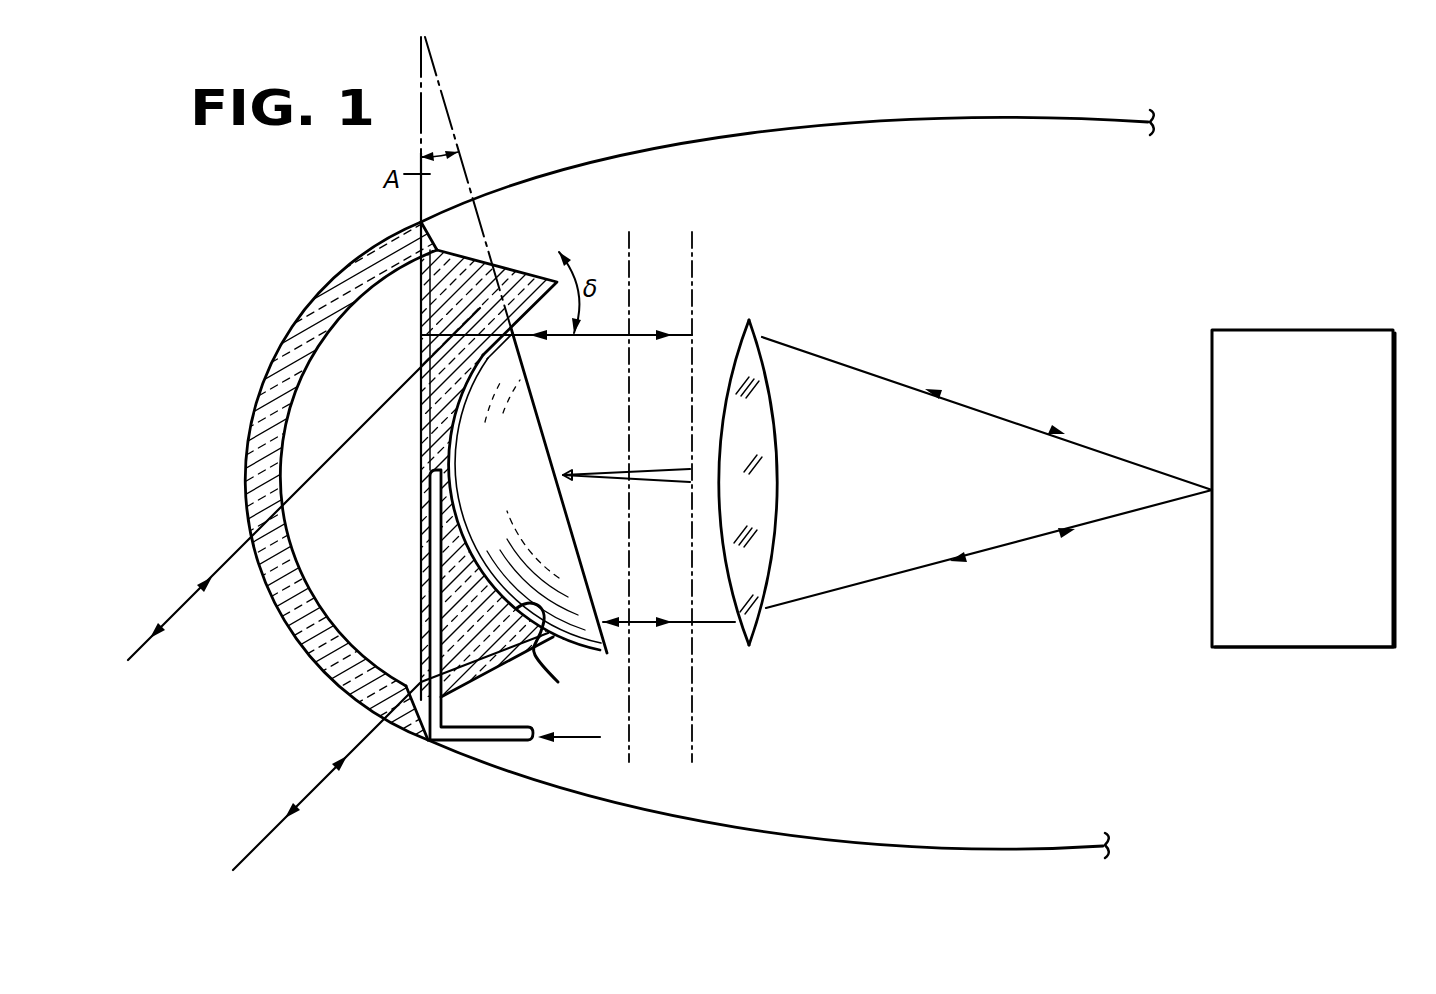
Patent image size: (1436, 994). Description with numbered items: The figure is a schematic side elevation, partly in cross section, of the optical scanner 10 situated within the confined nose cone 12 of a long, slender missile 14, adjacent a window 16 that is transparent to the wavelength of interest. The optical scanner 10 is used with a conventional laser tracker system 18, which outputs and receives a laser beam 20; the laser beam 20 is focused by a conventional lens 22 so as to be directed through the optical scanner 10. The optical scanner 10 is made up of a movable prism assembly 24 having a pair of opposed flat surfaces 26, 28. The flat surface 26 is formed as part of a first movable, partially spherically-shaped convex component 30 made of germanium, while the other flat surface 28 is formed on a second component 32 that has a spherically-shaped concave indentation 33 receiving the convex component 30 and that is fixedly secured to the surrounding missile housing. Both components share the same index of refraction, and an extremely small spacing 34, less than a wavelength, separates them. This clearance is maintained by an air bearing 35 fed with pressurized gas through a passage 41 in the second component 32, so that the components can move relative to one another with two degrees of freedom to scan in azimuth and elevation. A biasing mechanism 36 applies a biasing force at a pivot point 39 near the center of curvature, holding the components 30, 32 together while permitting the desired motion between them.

The optical scanner 10 is at (394, 568).
The nose cone 12 is at (360, 554).
The missile 14 is at (830, 851).
The window 16 is at (262, 428).
The laser tracker system 18 is at (1312, 330).
The laser beam 20 is at (1087, 472).
The lens 22 is at (770, 598).
The movable prism assembly 24 is at (521, 263).
The flat surface 26 is at (558, 458).
The flat surface 28 is at (421, 418).
The convex component 30 is at (562, 546).
The second component 32 is at (433, 318).
The spherically-shaped indentation 33 is at (556, 654).
The spacing 34 is at (456, 503).
The air bearing 35 is at (410, 488).
The biasing mechanism 36 is at (604, 490).
The pivot point 39 is at (570, 468).
The passage 41 is at (478, 745).